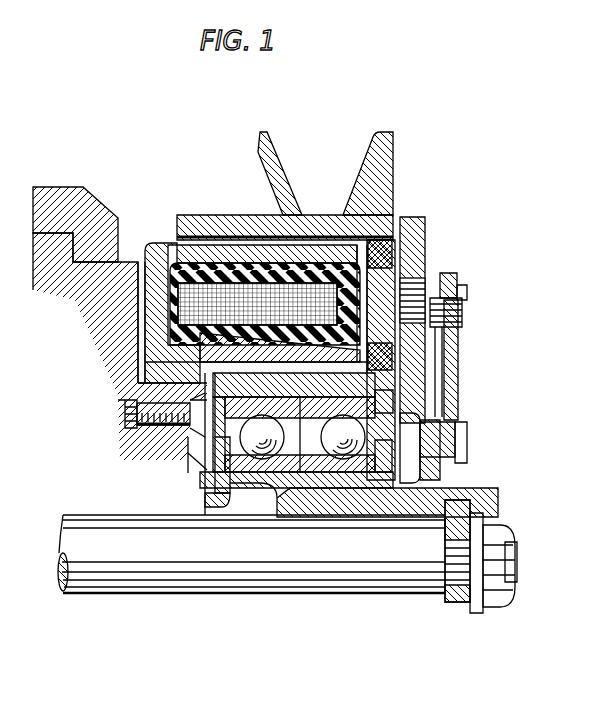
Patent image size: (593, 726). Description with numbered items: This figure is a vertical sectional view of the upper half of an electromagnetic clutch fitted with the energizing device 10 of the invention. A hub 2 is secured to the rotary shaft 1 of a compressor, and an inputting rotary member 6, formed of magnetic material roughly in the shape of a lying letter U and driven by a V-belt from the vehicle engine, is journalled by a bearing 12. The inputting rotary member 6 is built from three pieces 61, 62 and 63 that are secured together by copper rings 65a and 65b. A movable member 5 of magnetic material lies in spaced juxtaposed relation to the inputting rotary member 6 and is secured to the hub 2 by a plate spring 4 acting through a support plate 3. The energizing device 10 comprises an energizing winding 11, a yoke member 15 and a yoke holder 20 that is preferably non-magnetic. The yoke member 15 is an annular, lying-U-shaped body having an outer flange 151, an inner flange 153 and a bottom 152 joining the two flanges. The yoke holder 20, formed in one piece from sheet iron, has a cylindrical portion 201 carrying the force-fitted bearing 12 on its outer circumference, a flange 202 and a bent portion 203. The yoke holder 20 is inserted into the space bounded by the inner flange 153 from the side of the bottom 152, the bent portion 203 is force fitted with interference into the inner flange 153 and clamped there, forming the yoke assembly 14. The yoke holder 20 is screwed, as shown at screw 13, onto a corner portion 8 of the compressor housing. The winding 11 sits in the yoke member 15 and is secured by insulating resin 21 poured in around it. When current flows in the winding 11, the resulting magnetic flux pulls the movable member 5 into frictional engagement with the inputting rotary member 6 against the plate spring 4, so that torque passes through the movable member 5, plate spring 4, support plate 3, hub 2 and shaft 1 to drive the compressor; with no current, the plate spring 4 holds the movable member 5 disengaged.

The rotary shaft 1 is at (135, 592).
The hub 2 is at (498, 493).
The support plate 3 is at (452, 275).
The plate spring 4 is at (447, 337).
The movable member 5 is at (413, 217).
The inputting rotary member 6 is at (397, 146).
The corner portion 8 is at (177, 392).
The energizing device 10 is at (167, 233).
The energizing winding 11 is at (213, 292).
The bearing 12 is at (380, 413).
The screw 13 is at (128, 415).
The yoke assembly 14 is at (142, 257).
The yoke member 15 is at (156, 241).
The yoke holder 20 is at (182, 453).
The insulating resin 21 is at (317, 270).
The piece of inputting rotary member 61 is at (387, 178).
The piece of inputting rotary member 62 is at (410, 267).
The piece of inputting rotary member 63 is at (447, 377).
The copper ring 65a is at (427, 247).
The copper ring 65b is at (387, 357).
The outer flange 151 is at (247, 252).
The bottom 152 is at (140, 293).
The inner flange 153 is at (187, 348).
The cylindrical portion 201 is at (205, 503).
The flange 202 is at (187, 442).
The bent portion 203 is at (148, 370).